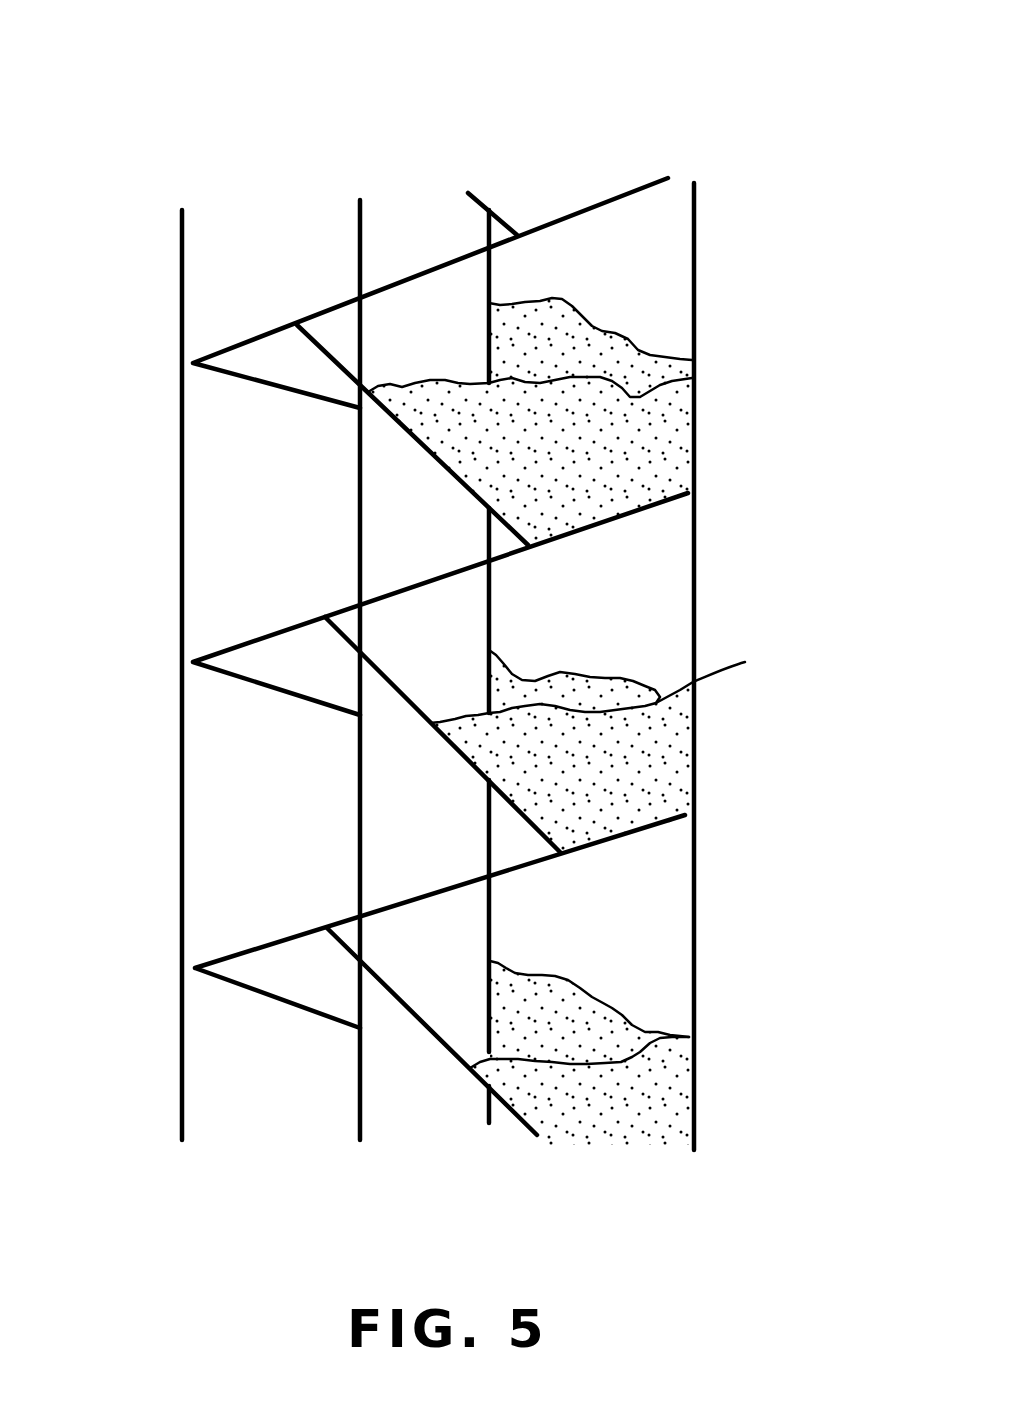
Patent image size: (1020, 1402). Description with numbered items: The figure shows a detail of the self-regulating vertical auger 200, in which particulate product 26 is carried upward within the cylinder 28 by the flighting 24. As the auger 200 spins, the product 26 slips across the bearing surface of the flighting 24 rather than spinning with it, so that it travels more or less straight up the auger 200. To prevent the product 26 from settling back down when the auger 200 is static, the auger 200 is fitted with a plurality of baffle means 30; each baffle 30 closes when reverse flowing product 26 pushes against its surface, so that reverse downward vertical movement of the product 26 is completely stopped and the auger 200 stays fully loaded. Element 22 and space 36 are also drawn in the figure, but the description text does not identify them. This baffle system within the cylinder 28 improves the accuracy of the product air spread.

The self-regulating vertical auger 200 is at (652, 88).
The first sheet layer 22 is at (372, 241).
The flighting 24 is at (227, 352).
The product 26 is at (623, 353).
The cylinder 28 is at (182, 750).
The baffle means 30 is at (537, 822).
The pocket space 36 is at (653, 262).